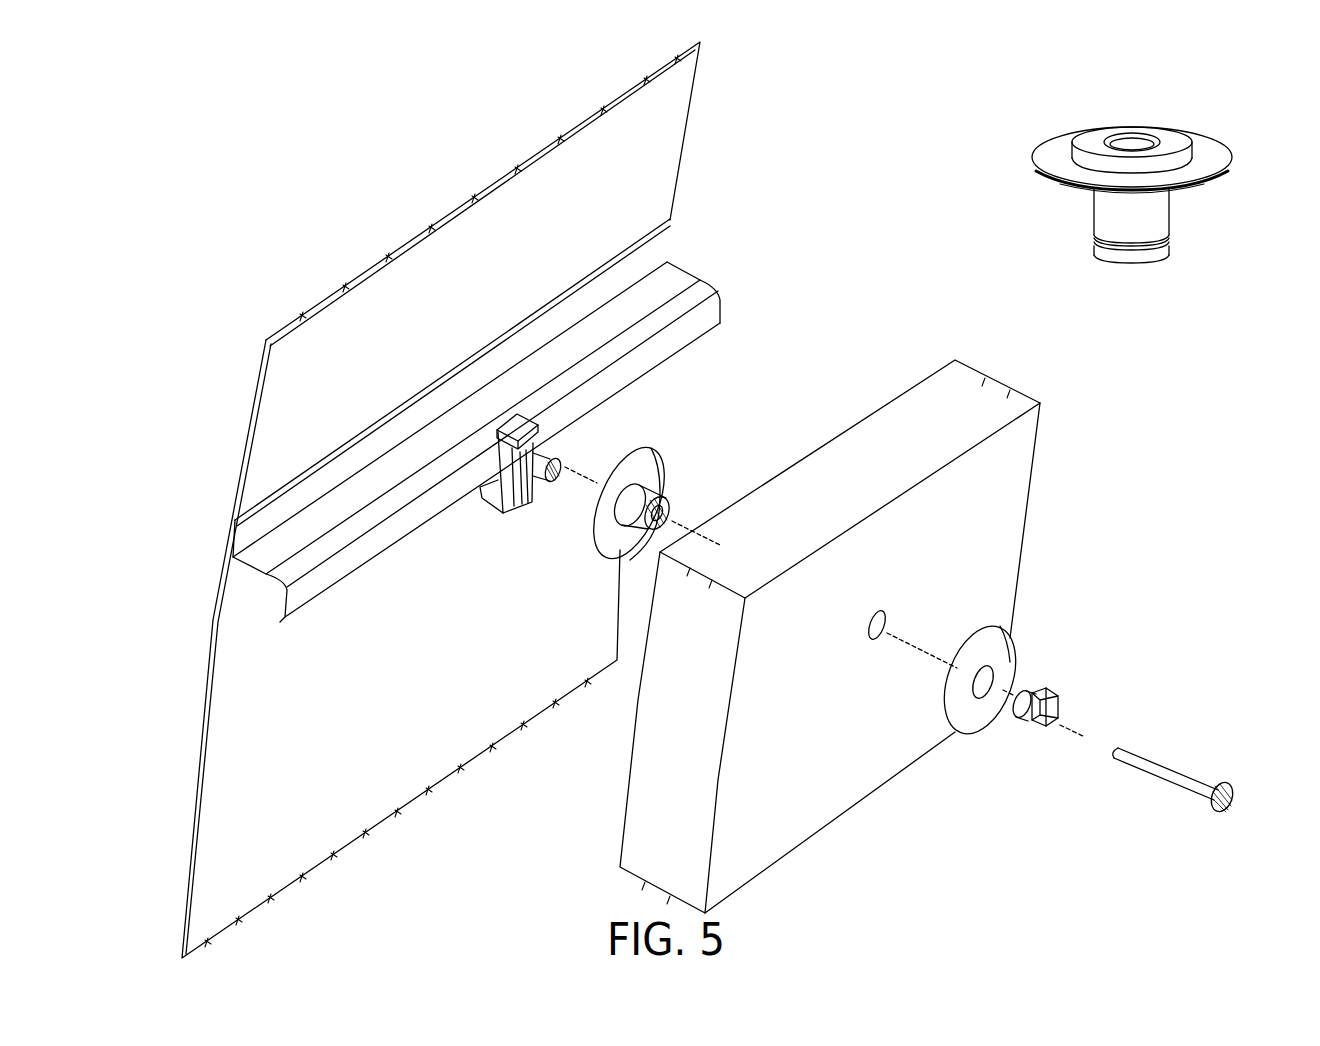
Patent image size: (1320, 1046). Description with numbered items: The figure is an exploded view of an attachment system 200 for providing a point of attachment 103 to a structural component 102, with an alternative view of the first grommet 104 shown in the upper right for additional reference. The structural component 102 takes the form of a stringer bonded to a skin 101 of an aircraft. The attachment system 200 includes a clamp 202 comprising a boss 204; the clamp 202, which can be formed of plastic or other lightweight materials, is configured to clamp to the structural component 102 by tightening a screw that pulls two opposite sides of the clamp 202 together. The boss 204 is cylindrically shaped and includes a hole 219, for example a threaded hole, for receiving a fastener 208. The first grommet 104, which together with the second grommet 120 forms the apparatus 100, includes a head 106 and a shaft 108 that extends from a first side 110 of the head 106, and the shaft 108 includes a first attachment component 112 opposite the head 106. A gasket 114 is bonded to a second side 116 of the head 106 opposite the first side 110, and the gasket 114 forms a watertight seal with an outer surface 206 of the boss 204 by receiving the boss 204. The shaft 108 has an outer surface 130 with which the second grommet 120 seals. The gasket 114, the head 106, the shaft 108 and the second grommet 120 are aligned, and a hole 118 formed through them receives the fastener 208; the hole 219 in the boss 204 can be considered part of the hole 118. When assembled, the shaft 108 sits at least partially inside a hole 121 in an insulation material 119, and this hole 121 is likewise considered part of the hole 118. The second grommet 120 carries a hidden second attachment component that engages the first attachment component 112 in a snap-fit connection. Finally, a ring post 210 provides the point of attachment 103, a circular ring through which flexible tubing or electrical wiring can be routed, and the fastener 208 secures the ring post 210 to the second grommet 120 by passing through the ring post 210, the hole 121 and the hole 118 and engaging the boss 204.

The apparatus 100 is at (823, 148).
The skin 101 is at (665, 120).
The structural component 102 is at (693, 290).
The point of attachment 103 is at (1045, 690).
The first grommet 104 is at (700, 415).
The head 106 is at (643, 462).
The shaft 108 is at (636, 510).
The first side 110 is at (1205, 185).
The first attachment component 112 is at (655, 512).
The gasket 114 is at (1095, 140).
The second side 116 is at (1218, 132).
The hole 118 is at (683, 528).
The insulation material 119 is at (988, 388).
The second grommet 120 is at (1005, 642).
The hole 121 is at (898, 623).
The outer surface 130 is at (1157, 208).
The attachment system 200 is at (238, 135).
The clamp 202 is at (500, 515).
The boss 204 is at (543, 450).
The outer surface 206 is at (545, 468).
The fastener 208 is at (1158, 768).
The ring post 210 is at (1050, 726).
The hole 219 is at (567, 470).